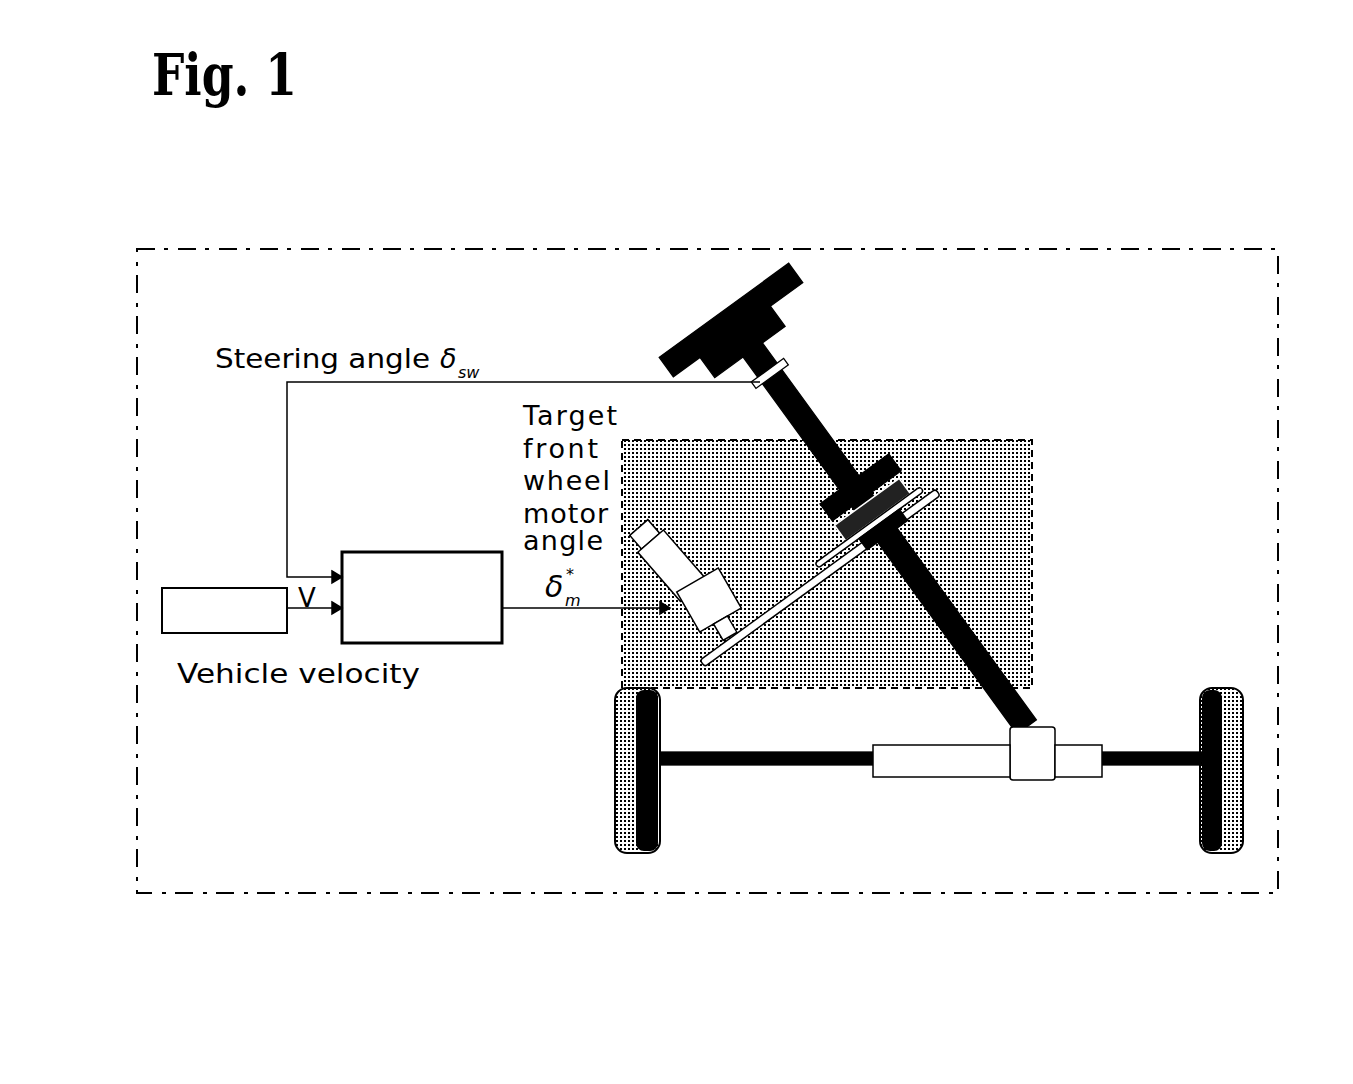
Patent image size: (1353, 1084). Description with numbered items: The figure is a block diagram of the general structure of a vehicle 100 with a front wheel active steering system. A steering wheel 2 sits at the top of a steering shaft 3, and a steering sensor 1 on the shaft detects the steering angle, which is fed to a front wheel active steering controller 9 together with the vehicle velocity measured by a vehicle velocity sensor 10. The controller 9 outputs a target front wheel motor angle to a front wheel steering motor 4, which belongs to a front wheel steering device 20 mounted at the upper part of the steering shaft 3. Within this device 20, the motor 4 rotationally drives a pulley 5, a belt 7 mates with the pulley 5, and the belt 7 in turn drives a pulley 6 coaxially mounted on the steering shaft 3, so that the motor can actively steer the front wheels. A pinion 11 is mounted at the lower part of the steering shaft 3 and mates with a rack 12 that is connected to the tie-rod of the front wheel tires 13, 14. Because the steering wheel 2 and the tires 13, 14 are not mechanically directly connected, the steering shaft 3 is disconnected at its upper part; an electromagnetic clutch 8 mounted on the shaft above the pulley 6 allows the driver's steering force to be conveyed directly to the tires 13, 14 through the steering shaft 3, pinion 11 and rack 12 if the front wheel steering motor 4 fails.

The vehicle 100 is at (1040, 248).
The steering sensor 1 is at (778, 383).
The steering wheel 2 is at (733, 301).
The steering shaft 3 is at (800, 428).
The front wheel steering motor 4 is at (690, 522).
The pulley 5 is at (758, 605).
The pulley 6 is at (927, 527).
The belt 7 is at (817, 590).
The electromagnetic clutch 8 is at (893, 468).
The front wheel active steering controller 9 is at (460, 645).
The vehicle velocity sensor 10 is at (212, 588).
The pinion 11 is at (1025, 742).
The rack 12 is at (963, 772).
The front wheel tire 13 is at (648, 785).
The front wheel tire 14 is at (1215, 690).
The front wheel steering device 20 is at (978, 438).